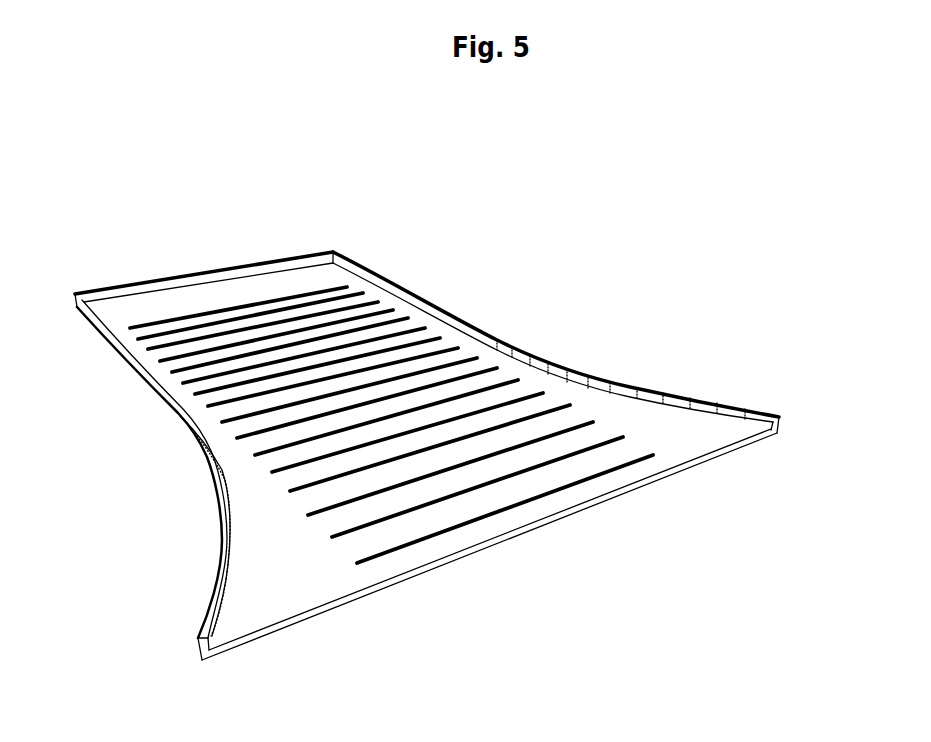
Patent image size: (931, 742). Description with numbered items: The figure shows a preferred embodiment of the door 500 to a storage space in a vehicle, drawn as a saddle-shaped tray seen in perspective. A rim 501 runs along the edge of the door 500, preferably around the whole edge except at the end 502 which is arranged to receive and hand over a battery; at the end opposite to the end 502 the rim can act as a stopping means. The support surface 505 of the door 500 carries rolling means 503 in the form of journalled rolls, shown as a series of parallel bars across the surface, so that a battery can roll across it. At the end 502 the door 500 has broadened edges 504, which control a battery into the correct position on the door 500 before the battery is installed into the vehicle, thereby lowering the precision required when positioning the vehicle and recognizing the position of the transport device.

The door 500 is at (215, 230).
The rim 501 is at (425, 307).
The end 502 is at (523, 538).
The rolling means 503 is at (352, 498).
The broadened edges 504 is at (698, 397).
The support surface 505 is at (638, 423).